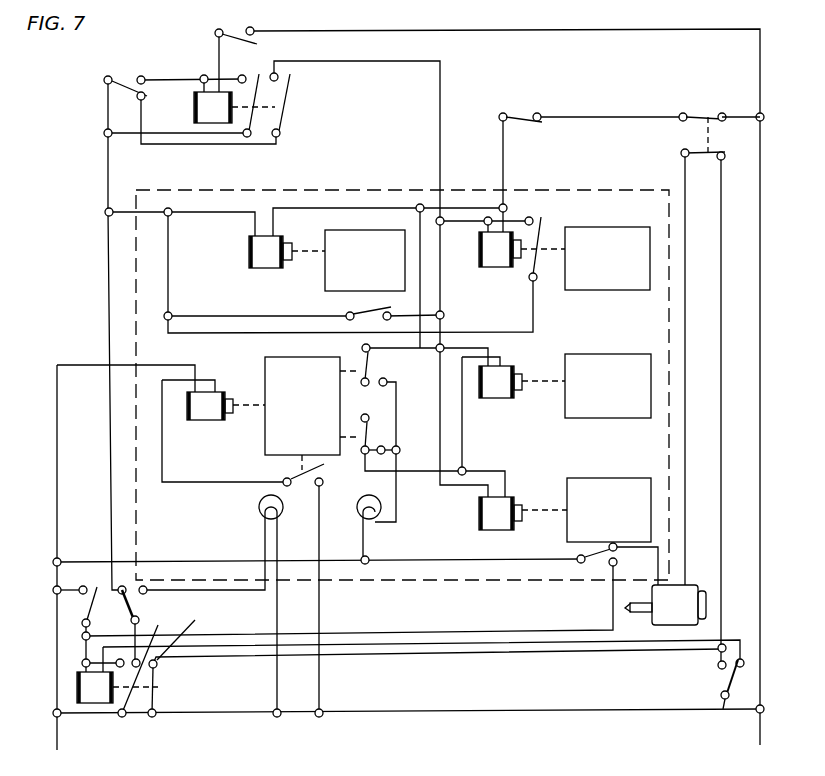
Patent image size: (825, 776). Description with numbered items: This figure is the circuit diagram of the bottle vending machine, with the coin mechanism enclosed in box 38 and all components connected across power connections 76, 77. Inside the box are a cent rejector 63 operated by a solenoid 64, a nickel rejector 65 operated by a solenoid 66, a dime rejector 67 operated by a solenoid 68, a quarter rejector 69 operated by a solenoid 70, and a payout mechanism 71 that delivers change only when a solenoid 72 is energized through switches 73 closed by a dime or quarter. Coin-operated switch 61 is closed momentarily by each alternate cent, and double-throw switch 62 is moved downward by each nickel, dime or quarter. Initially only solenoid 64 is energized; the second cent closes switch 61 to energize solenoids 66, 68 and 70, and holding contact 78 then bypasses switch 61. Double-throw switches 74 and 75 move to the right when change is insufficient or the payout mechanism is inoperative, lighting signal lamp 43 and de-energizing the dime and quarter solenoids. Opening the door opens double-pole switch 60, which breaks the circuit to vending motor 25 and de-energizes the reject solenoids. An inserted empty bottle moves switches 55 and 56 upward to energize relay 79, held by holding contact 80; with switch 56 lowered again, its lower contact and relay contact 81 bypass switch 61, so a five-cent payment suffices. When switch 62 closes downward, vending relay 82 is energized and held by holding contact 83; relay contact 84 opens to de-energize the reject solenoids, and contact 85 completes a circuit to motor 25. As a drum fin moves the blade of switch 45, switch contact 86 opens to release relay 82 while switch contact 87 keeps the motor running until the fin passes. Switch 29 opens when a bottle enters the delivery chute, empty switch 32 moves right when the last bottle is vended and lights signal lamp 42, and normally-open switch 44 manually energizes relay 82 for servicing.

The switch 55 is at (234, 36).
The switch 56 is at (112, 79).
The relay 79 is at (210, 120).
The holding contact 80 is at (244, 77).
The relay contact 81 is at (278, 73).
The switch 29 is at (522, 109).
The double-pole switch 60 is at (694, 116).
The box 38 is at (287, 191).
The cent rejector 63 is at (366, 231).
The solenoid 64 is at (260, 264).
The coin-operated switch 61 is at (366, 308).
The nickel rejector 65 is at (608, 228).
The solenoid 66 is at (500, 262).
The holding contact 78 is at (535, 218).
The dime rejector 67 is at (600, 355).
The solenoid 68 is at (506, 393).
The quarter rejector 69 is at (608, 479).
The solenoid 70 is at (500, 523).
The payout mechanism 71 is at (306, 356).
The solenoid 72 is at (207, 417).
The switches 73 is at (290, 479).
The double-throw switch 74 is at (371, 366).
The double-throw switch 75 is at (368, 437).
The signal lamp 42 is at (260, 511).
The signal lamp 43 is at (363, 511).
The double-throw coin-operated switch 62 is at (598, 556).
The vending motor 25 is at (675, 617).
The normally-open switch 44 is at (94, 608).
The empty switch 32 is at (131, 606).
The holding contact 83 is at (121, 658).
The relay contact 84 is at (161, 622).
The contact 85 is at (195, 622).
The vending relay 82 is at (100, 704).
The connection 76 is at (56, 732).
The connection 77 is at (763, 729).
The switch contact 86 is at (745, 663).
The switch contact 87 is at (718, 666).
The switch 45 is at (727, 685).